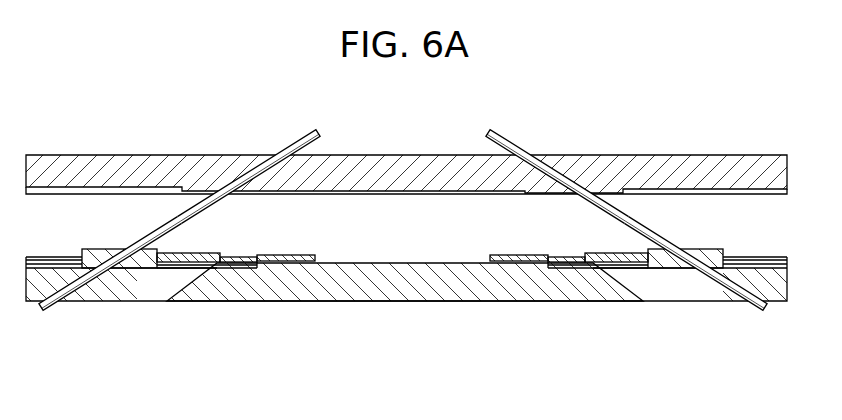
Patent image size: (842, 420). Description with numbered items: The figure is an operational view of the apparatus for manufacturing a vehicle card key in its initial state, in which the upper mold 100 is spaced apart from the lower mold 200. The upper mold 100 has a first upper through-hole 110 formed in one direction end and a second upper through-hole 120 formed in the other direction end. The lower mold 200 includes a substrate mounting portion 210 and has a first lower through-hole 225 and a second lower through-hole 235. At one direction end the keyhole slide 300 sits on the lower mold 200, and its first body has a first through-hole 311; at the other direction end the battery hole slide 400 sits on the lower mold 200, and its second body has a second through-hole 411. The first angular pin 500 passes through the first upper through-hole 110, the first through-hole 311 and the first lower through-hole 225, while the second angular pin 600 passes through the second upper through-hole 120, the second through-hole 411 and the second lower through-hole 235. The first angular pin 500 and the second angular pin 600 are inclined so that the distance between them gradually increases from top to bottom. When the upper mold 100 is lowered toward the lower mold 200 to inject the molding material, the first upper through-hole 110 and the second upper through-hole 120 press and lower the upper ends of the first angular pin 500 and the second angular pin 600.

The upper mold 100 is at (432, 155).
The first upper through-hole 110 is at (267, 177).
The second upper through-hole 120 is at (540, 154).
The lower mold 200 is at (515, 301).
The substrate mounting portion 210 is at (358, 265).
The first lower through-hole 225 is at (120, 286).
The second lower through-hole 235 is at (692, 275).
The keyhole slide 300 is at (150, 270).
The first through-hole 311 is at (117, 268).
The battery hole slide 400 is at (663, 266).
The second through-hole 411 is at (690, 268).
The first angular pin 500 is at (58, 303).
The second angular pin 600 is at (725, 285).